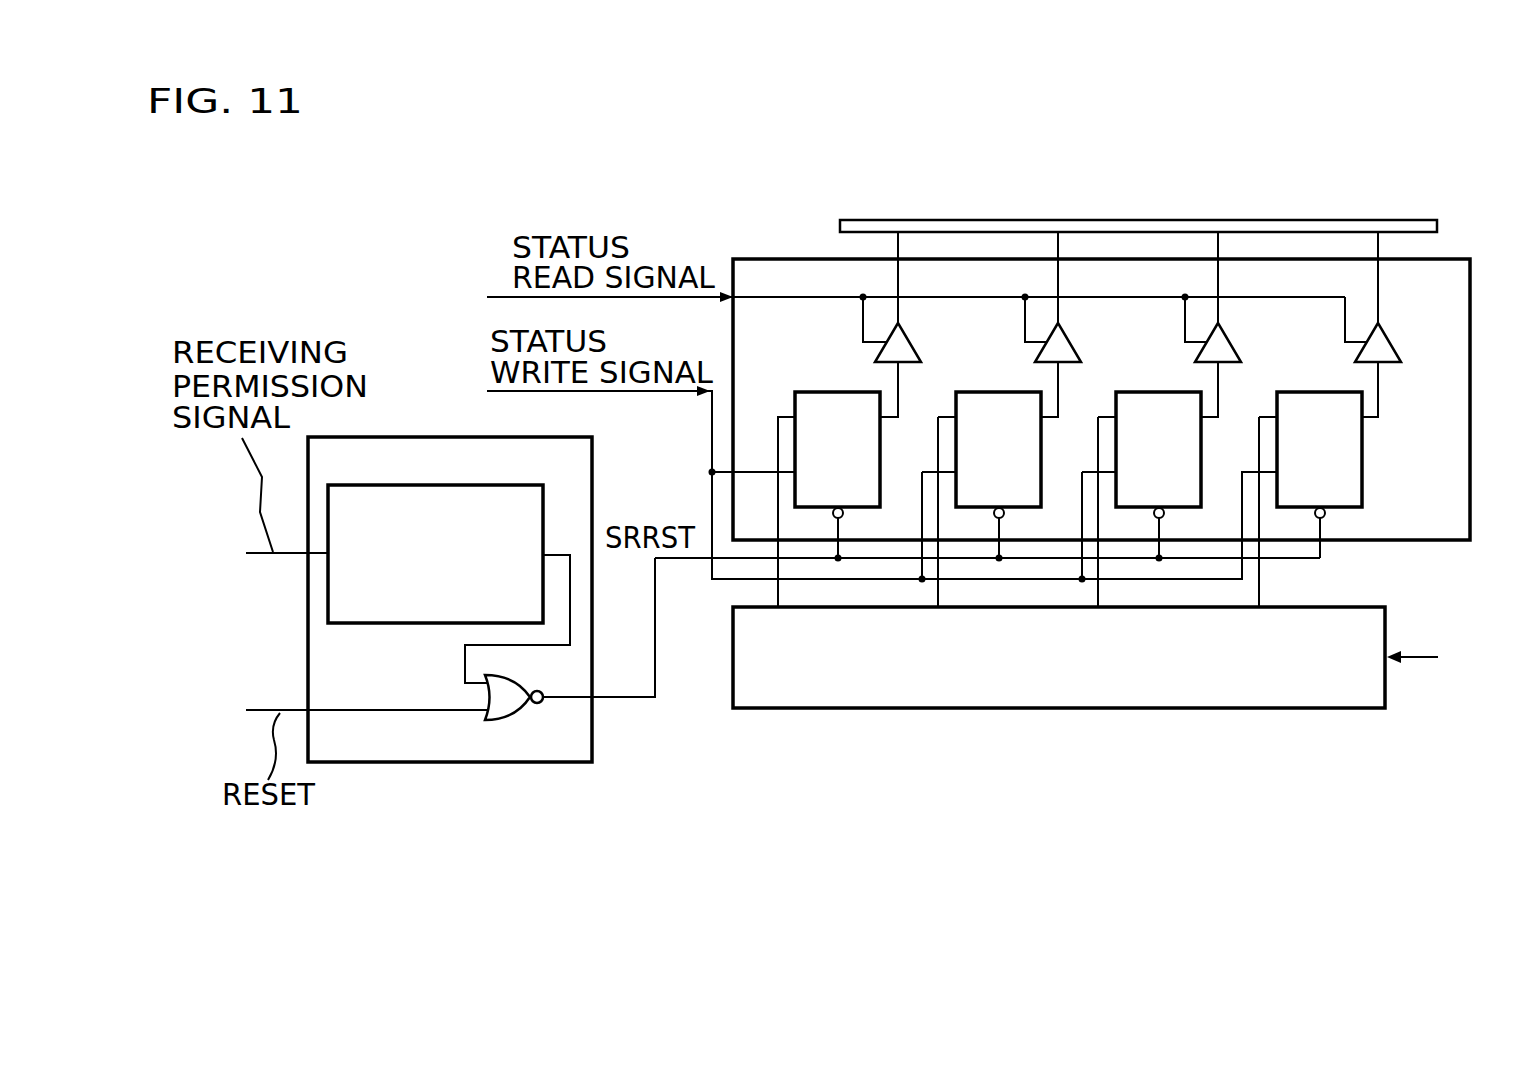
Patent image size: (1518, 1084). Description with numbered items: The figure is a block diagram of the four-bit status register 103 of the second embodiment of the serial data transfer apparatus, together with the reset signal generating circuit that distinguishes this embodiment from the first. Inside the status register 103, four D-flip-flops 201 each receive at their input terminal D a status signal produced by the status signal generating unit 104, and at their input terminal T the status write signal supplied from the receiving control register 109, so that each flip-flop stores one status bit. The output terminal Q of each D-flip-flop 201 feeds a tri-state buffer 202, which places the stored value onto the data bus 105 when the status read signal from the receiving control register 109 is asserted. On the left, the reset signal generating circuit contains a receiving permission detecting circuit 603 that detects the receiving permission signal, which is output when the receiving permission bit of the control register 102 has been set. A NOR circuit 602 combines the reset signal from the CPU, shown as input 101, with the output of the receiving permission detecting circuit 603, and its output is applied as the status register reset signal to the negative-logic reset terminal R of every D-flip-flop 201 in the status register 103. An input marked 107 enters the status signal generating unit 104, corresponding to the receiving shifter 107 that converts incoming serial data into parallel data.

The reset signal line 101 is at (233, 705).
The control register 102 is at (233, 548).
The status register 103 is at (1450, 259).
The status signal generating unit 104 is at (1387, 620).
The data bus 105 is at (1285, 220).
The receiving shifter 107 is at (1508, 672).
The receiving control register 109 is at (476, 291).
The D-flip-flop 201 is at (816, 392).
The tri-state buffer 202 is at (935, 335).
The NOR circuit 602 is at (497, 723).
The receiving permission detecting circuit 603 is at (462, 485).